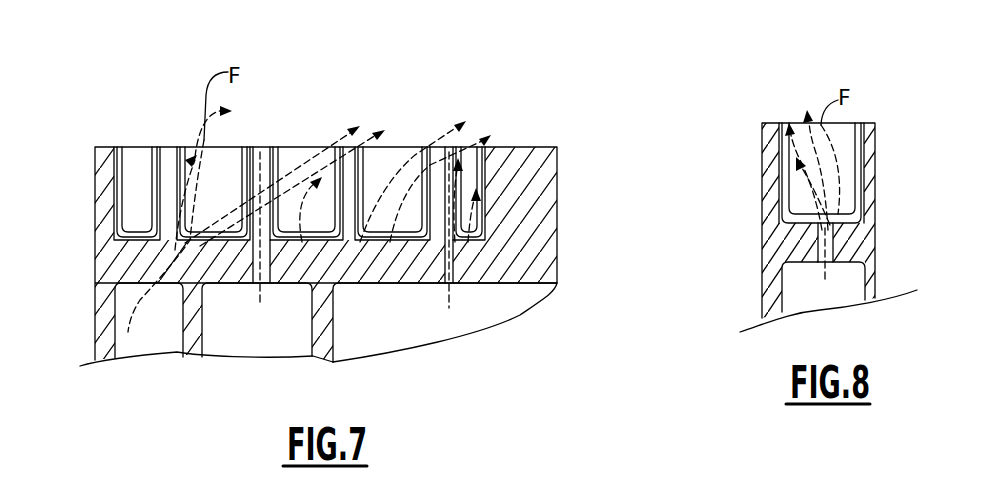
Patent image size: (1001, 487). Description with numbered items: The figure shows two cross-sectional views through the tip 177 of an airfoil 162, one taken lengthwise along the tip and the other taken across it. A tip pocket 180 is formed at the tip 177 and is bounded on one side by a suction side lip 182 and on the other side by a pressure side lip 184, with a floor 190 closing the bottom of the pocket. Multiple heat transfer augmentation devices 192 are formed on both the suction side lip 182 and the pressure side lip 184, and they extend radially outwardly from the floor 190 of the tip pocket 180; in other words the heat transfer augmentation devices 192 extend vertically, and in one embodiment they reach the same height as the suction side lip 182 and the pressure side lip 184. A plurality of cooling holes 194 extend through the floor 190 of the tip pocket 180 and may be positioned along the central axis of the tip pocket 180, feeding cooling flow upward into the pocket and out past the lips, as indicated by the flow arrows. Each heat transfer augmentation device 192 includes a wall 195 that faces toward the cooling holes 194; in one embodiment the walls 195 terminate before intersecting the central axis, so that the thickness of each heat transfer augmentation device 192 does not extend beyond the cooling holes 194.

In FIG. 7, the airfoil 162 is at (537, 246).
In FIG. 7, the tip 177 is at (540, 134).
In FIG. 8, the tip 177 is at (739, 108).
In FIG. 7, the tip pocket 180 is at (138, 172).
In FIG. 8, the tip pocket 180 is at (855, 192).
In FIG. 7, the suction side lip 182 is at (407, 148).
In FIG. 8, the suction side lip 182 is at (781, 199).
In FIG. 8, the pressure side lip 184 is at (863, 160).
In FIG. 7, the floor 190 is at (128, 243).
In FIG. 8, the floor 190 is at (860, 214).
In FIG. 7, the heat transfer augmentation device 192 is at (174, 137).
In FIG. 8, the heat transfer augmentation device 192 is at (786, 122).
In FIG. 7, the cooling hole 194 is at (186, 268).
In FIG. 8, the cooling hole 194 is at (813, 238).
In FIG. 7, the wall 195 is at (170, 215).